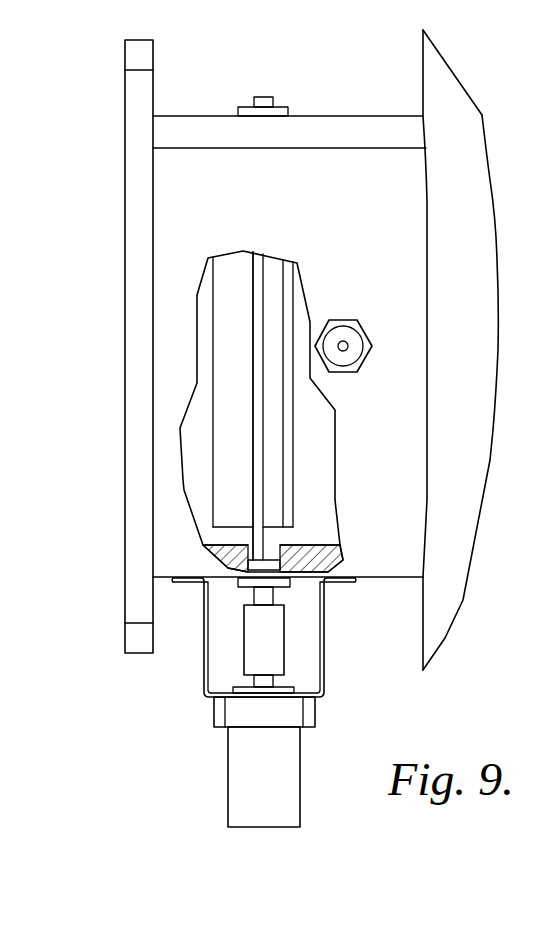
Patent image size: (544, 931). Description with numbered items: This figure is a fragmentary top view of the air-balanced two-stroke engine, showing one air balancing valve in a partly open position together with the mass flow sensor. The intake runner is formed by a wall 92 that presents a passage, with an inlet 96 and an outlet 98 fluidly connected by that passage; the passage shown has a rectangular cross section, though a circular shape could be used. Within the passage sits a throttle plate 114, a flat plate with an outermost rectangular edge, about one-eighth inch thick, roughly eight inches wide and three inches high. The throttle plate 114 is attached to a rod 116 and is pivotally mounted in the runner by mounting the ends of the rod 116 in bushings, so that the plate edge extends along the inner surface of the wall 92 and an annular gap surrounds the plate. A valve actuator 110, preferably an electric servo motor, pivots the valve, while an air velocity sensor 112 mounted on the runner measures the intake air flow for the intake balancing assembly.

The wall 92 is at (322, 125).
The inlet 96 is at (433, 274).
The outlet 98 is at (117, 265).
The valve actuator 110 is at (298, 715).
The air velocity sensor 112 is at (357, 365).
The throttle plate 114 is at (241, 268).
The rod 116 is at (263, 540).